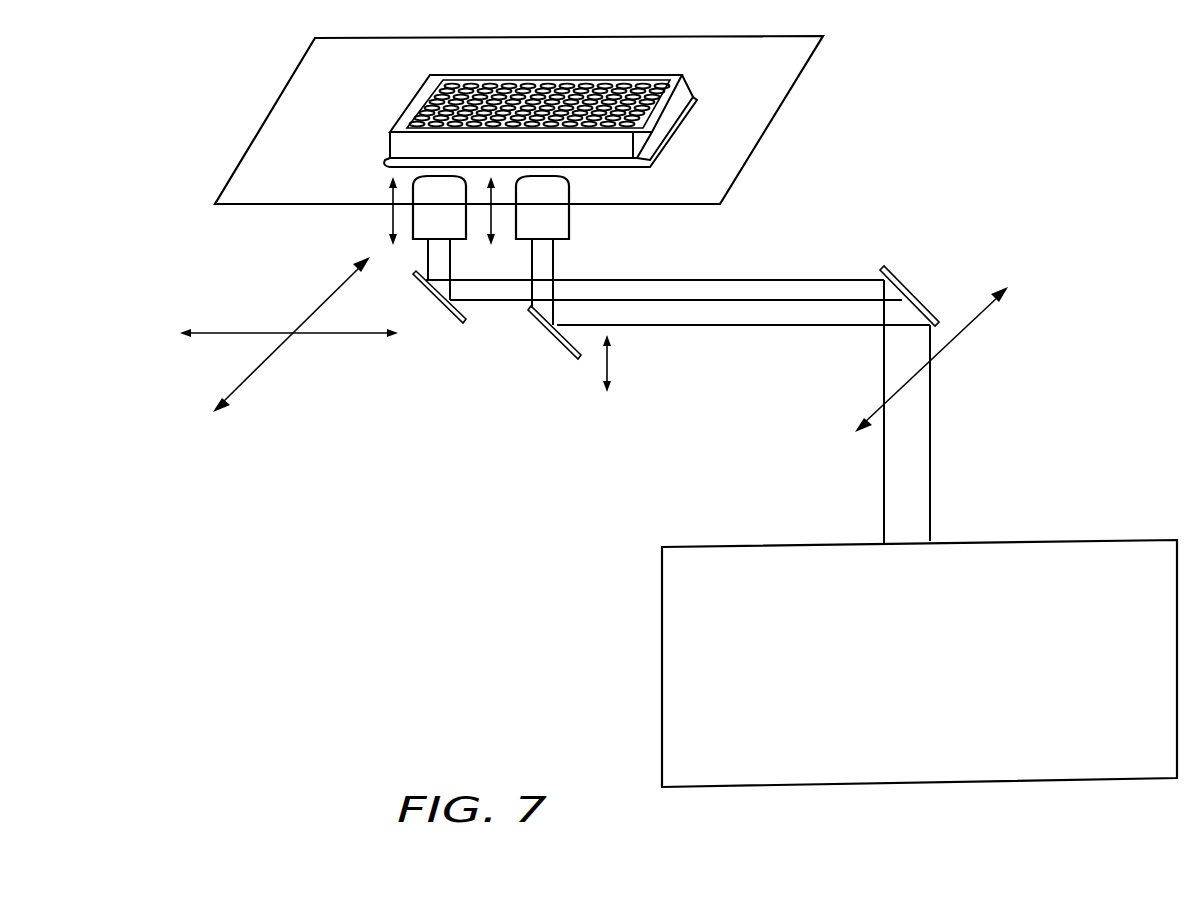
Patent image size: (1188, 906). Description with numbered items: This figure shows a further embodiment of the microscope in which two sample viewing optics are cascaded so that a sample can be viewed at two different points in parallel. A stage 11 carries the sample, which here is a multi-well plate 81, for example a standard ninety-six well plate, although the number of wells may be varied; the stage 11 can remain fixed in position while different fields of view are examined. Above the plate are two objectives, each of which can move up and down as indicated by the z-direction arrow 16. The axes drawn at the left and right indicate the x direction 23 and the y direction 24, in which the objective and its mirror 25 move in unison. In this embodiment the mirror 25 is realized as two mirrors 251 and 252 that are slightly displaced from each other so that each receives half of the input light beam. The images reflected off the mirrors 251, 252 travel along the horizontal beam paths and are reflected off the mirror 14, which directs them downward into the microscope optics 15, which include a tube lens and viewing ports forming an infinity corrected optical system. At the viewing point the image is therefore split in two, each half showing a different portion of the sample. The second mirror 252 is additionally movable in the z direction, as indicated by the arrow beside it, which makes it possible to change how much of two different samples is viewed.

The stage 11 is at (790, 70).
The multi-well plate 81 is at (685, 82).
The arrow 16 is at (393, 210).
The x direction 23 is at (350, 335).
The y direction 24 is at (330, 292).
The mirror 25 is at (497, 345).
The first mirror 251 is at (463, 324).
The second mirror 252 is at (558, 358).
The mirror 14 is at (912, 292).
The microscope optics 15 is at (662, 668).